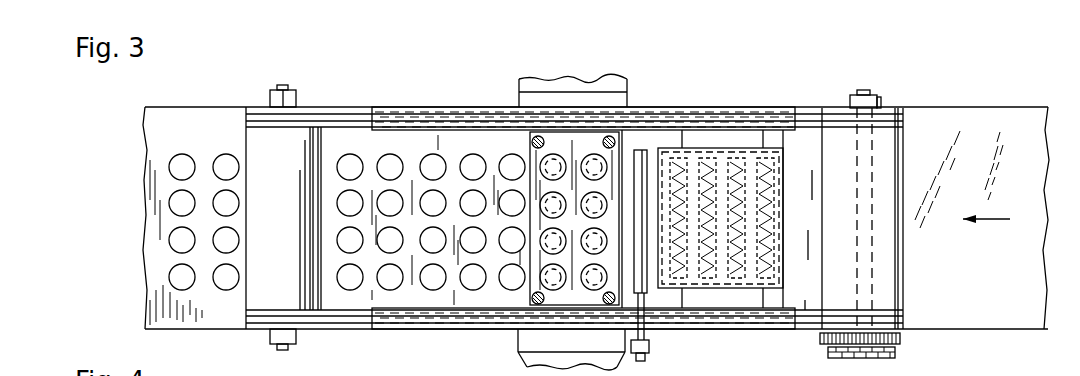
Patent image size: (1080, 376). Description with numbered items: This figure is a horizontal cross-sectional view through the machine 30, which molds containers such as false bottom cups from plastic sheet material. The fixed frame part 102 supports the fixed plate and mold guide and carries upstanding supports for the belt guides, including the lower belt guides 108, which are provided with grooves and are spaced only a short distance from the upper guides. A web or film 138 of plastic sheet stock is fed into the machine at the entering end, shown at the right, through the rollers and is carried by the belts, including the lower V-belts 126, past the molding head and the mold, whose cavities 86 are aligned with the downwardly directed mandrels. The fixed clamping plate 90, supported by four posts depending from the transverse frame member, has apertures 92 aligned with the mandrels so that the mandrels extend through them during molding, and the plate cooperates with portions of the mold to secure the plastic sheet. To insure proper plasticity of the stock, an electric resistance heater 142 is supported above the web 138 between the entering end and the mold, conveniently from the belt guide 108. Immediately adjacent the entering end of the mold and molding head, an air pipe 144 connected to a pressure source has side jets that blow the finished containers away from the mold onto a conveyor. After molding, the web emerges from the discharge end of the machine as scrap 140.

The machine 30 is at (795, 93).
The cavities 86 is at (616, 138).
The fixed clamping plate 90 is at (528, 150).
The apertures 92 is at (565, 352).
The frame part 102 is at (619, 96).
The lower belt guides 108 is at (612, 362).
The lower V-belts 126 is at (807, 124).
The web or film 138 is at (1002, 322).
The scrap 140 is at (212, 320).
The electric resistance heater 142 is at (720, 285).
The air pipe 144 is at (641, 160).